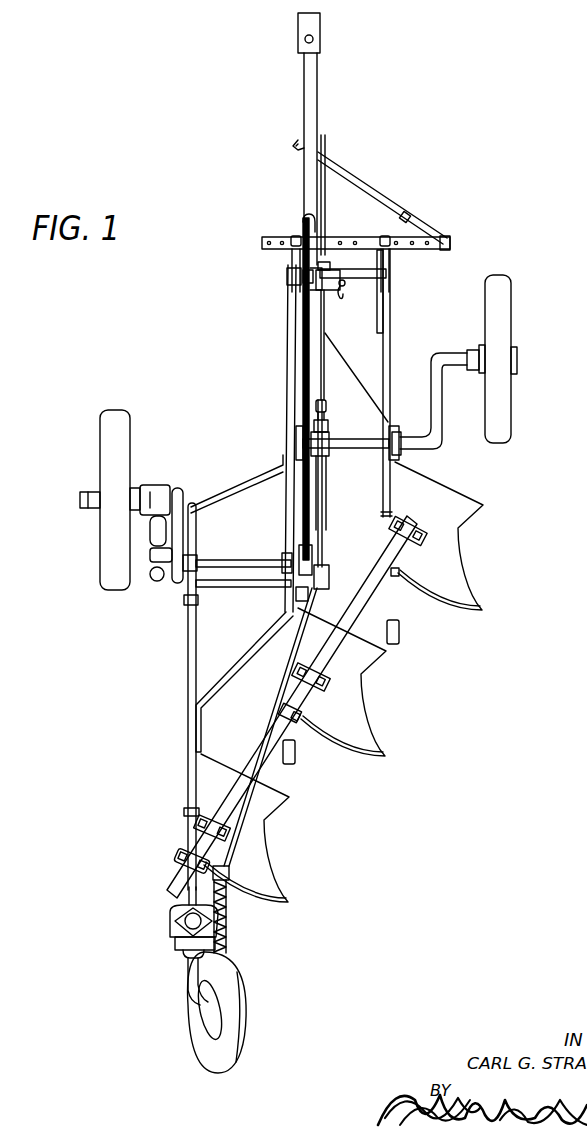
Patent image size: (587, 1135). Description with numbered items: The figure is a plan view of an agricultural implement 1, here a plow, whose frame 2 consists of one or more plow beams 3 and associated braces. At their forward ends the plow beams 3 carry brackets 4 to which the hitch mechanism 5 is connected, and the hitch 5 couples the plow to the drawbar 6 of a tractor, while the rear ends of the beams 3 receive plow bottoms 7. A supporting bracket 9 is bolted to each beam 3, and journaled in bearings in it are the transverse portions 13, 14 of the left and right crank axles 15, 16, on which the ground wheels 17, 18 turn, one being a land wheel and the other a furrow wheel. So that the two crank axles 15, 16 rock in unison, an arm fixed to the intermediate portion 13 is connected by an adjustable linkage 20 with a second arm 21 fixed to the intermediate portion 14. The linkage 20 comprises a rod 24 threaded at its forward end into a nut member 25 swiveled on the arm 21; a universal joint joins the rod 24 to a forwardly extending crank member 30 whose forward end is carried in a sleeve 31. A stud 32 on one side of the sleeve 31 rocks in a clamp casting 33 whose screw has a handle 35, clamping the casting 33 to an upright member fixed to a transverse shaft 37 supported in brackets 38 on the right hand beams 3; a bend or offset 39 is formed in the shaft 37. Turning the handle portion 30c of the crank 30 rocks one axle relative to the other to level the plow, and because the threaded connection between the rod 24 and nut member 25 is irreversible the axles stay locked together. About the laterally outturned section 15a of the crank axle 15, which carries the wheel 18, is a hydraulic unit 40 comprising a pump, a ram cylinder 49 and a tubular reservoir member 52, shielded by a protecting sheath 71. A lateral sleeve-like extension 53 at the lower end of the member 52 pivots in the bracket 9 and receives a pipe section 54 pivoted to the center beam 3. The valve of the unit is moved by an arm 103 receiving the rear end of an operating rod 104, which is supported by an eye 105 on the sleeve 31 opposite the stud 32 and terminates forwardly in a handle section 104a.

The agricultural implement 1 is at (104, 357).
The frame 2 is at (266, 479).
The plow beams 3 is at (387, 368).
The brackets 4 is at (292, 259).
The hitch mechanism 5 is at (364, 167).
The drawbar 6 is at (304, 28).
The plow bottoms 7 is at (455, 549).
The supporting bracket 9 is at (296, 430).
The transverse portion of left crank axle 13 is at (232, 588).
The transverse portion of right crank axle 14 is at (352, 445).
The left crank axle 15 is at (180, 492).
The laterally outturned section of crank axle 15a is at (80, 498).
The right crank axle 16 is at (443, 437).
The ground wheel 17 is at (500, 305).
The ground wheel 18 is at (121, 438).
The adjustable linkage 20 is at (328, 482).
The second arm 21 is at (343, 417).
The rod 24 is at (322, 507).
The nut member 25 is at (321, 452).
The crank member 30 is at (322, 352).
The handle portion 30c is at (322, 193).
The sleeve 31 is at (318, 284).
The stud 32 is at (338, 270).
The clamp casting 33 is at (327, 258).
The handle 35 is at (340, 288).
The transverse shaft 37 is at (357, 270).
The brackets 38 is at (383, 301).
The bend or offset 39 is at (308, 280).
The hydraulic unit 40 is at (148, 581).
The ram cylinder 49 is at (158, 540).
The tubular member 52 is at (156, 561).
The lateral sleeve-like extension 53 is at (185, 557).
The pipe or shaft section 54 is at (235, 561).
The protecting sheath 71 is at (156, 513).
The arm 103 is at (305, 548).
The operating rod 104 is at (303, 354).
The handle section 104a is at (305, 216).
The eye 105 is at (290, 272).